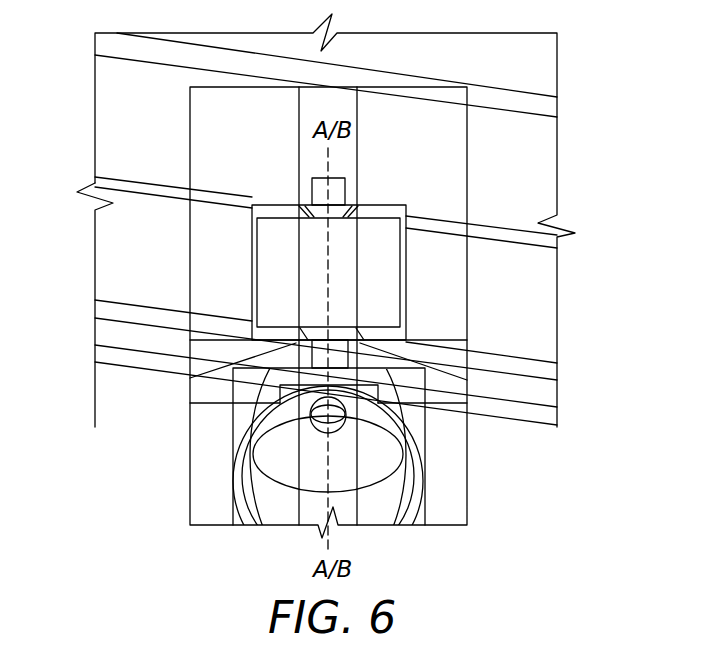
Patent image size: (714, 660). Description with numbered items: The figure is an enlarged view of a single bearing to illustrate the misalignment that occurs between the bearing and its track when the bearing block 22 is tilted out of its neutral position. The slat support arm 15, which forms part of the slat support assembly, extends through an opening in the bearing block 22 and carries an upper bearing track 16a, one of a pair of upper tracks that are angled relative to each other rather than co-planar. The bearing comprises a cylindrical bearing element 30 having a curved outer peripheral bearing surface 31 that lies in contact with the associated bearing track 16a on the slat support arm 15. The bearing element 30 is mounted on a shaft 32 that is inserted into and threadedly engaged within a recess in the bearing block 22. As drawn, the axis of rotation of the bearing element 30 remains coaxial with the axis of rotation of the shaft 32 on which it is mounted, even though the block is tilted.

The slat support arm 15 is at (85, 61).
The upper bearing track 16a is at (548, 290).
The bearing block 22 is at (190, 448).
The cylindrical bearing element 30 is at (255, 230).
The curved outer peripheral bearing surface 31 is at (266, 277).
The shaft 32 is at (311, 190).